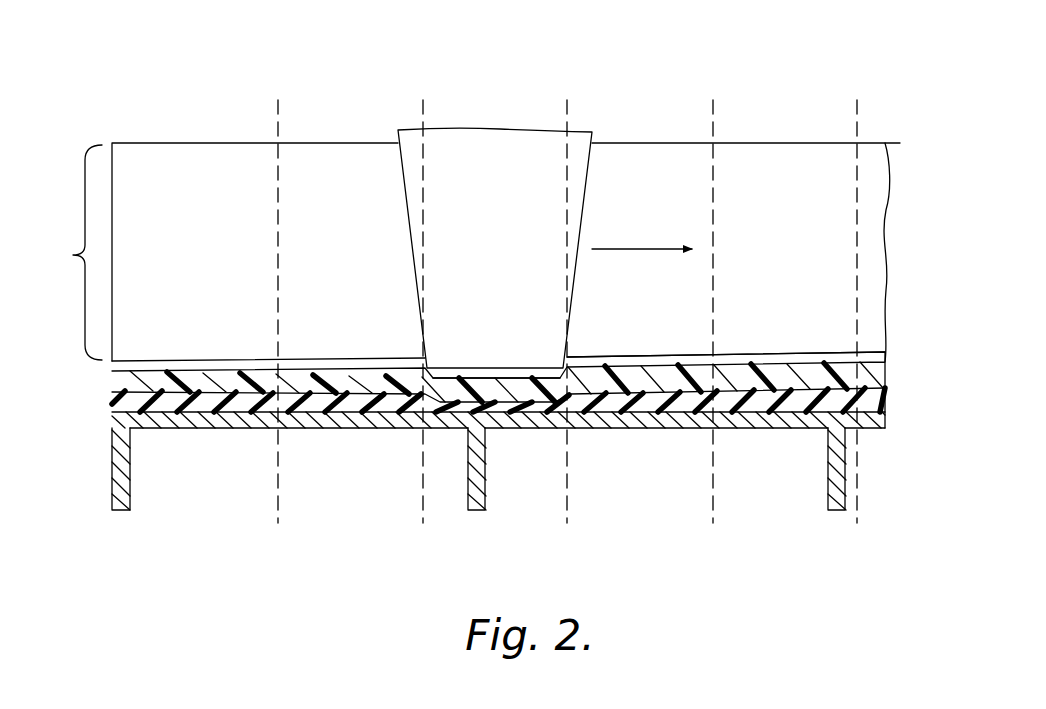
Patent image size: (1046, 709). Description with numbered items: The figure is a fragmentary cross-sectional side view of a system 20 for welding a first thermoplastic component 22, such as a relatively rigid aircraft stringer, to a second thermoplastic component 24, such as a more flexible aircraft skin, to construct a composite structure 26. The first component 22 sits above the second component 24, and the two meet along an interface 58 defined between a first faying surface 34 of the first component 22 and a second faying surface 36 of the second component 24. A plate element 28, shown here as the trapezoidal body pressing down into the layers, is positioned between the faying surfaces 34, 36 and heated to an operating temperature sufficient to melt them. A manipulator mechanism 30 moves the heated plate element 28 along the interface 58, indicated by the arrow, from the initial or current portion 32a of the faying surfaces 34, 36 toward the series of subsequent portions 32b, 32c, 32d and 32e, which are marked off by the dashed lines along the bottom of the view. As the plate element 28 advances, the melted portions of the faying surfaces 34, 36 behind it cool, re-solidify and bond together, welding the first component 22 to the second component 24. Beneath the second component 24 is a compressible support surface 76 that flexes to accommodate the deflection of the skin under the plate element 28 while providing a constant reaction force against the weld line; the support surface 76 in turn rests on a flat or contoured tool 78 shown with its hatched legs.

The system 20 is at (392, 122).
The first thermoplastic component 22 is at (873, 355).
The second thermoplastic component 24 is at (886, 372).
The composite structure 26 is at (71, 252).
The plate element 28 is at (467, 375).
The manipulator mechanism 30 is at (493, 231).
The first faying surface 34 is at (597, 356).
The second faying surface 36 is at (605, 383).
The interface 58 is at (887, 359).
The support surface 76 is at (882, 402).
The tool 78 is at (870, 422).
The initial portion of the faying surfaces 32a is at (196, 486).
The subsequent portion of the faying surfaces 32b is at (350, 498).
The subsequent portion of the faying surfaces 32c is at (520, 502).
The subsequent portion of the faying surfaces 32d is at (609, 500).
The subsequent portion of the faying surfaces 32e is at (767, 496).